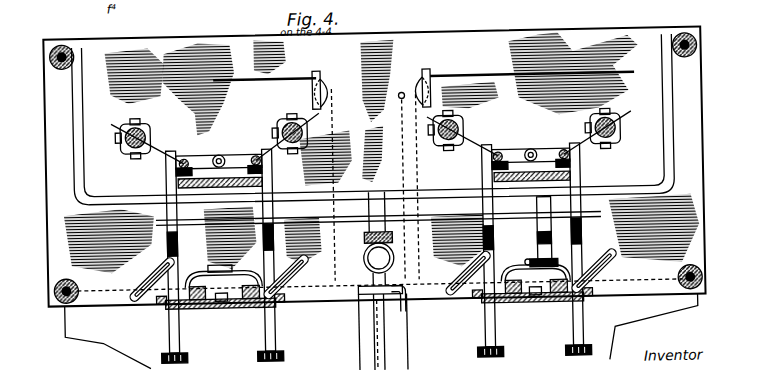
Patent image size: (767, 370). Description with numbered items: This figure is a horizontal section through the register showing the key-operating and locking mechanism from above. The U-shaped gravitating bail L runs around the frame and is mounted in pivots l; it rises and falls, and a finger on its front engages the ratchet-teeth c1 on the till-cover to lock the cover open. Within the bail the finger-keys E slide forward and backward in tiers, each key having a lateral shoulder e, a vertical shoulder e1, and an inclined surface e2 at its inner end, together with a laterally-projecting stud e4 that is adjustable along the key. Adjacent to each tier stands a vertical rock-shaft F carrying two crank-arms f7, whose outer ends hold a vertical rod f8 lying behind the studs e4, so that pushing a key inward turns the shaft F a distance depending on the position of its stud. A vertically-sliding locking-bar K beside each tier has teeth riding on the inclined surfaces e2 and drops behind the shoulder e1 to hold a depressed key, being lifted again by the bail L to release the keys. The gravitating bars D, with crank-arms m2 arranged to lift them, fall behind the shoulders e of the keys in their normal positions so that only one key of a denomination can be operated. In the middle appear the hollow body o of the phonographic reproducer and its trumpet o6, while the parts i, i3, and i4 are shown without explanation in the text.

The pivots l is at (76, 52).
The U-shaped gravitating bail L is at (80, 139).
The vertically-sliding locking-bar K is at (167, 198).
The finger-keys E is at (377, 253).
The laterally-projecting stud e4 is at (192, 169).
The inclined surface e2 is at (272, 180).
The vertical shoulder e1 is at (166, 232).
The vertical rock-shaft F is at (124, 122).
The crank-arms f7 is at (158, 150).
The vertical rod f8 is at (186, 156).
The crank-arms m2 is at (534, 257).
The gravitating locking-bar D is at (232, 304).
The lateral shoulder e is at (178, 306).
The hollow body o is at (330, 93).
The trumpet o6 is at (352, 24).
The central tube i is at (396, 276).
The lower pipe i3 is at (362, 302).
The side pipe i4 is at (398, 350).
The ratchet-teeth c1 is at (368, 352).